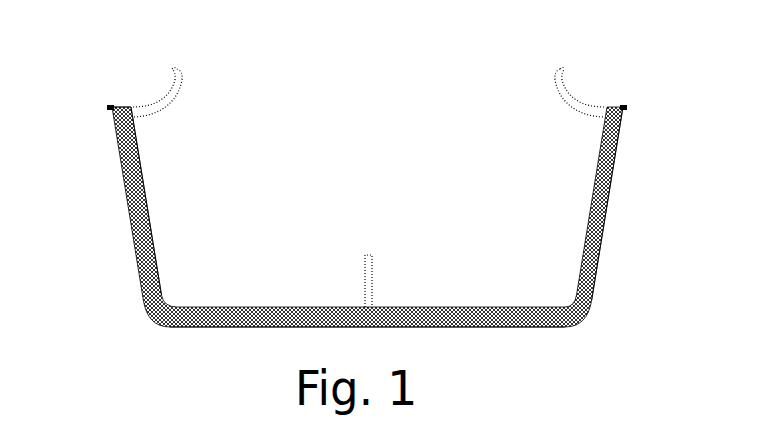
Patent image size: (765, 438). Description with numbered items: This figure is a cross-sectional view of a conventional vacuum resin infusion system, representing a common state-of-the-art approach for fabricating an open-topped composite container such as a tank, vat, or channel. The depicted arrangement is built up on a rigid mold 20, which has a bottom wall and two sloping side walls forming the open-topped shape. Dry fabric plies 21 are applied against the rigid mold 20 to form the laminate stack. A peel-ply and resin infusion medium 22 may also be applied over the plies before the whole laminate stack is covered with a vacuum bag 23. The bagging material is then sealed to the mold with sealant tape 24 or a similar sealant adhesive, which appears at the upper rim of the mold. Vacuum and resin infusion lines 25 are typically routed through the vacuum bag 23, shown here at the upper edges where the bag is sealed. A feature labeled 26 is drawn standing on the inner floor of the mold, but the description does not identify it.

The rigid mold 20 is at (132, 243).
The dry fabric plies 21 is at (597, 283).
The peel-ply and resin infusion medium 22 is at (609, 214).
The vacuum bag 23 is at (158, 258).
The sealant tape 24 is at (108, 106).
The vacuum and resin infusion lines 25 is at (172, 68).
The rib 26 is at (367, 255).